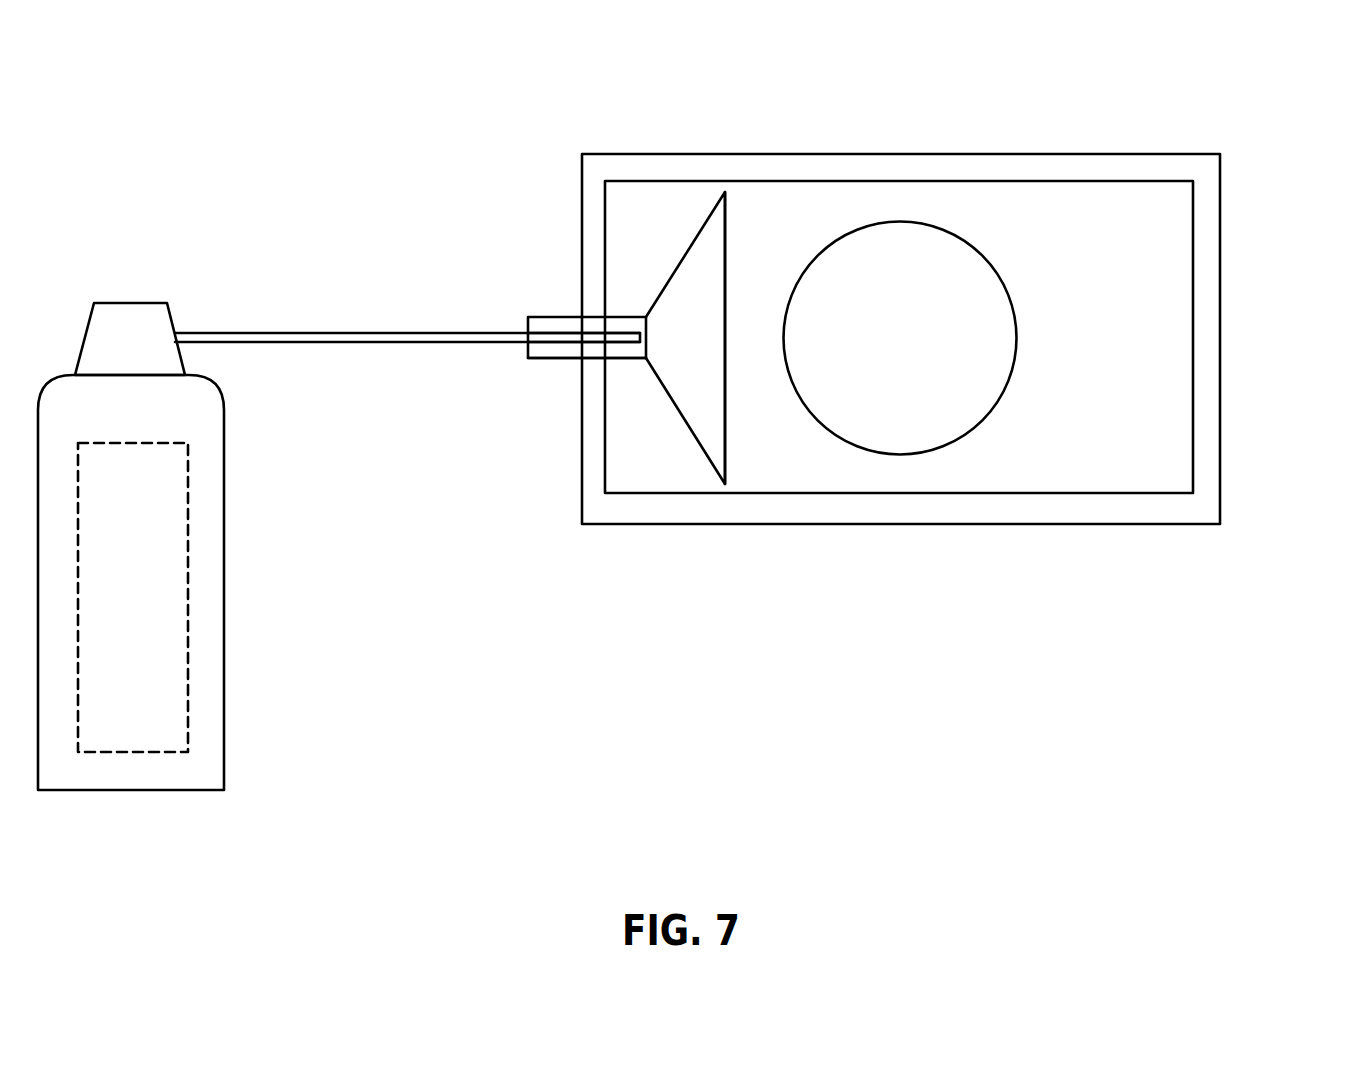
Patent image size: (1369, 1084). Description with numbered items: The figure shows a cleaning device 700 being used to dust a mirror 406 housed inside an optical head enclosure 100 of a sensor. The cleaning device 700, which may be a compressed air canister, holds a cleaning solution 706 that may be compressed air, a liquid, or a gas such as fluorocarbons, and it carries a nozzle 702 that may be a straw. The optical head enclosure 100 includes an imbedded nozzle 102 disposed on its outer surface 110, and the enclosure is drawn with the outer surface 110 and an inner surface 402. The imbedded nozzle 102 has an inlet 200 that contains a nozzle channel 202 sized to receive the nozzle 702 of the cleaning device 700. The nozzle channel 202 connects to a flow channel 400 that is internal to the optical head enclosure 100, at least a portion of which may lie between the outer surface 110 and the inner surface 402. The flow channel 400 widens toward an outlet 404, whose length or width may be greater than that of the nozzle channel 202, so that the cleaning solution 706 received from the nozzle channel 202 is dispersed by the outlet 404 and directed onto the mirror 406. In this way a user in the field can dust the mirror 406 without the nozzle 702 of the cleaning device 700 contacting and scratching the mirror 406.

The optical head enclosure 100 is at (1265, 108).
The outer surface 110 is at (1135, 525).
The inner surface 402 is at (1140, 492).
The flow channel 400 is at (676, 305).
The outlet 404 is at (727, 222).
The mirror 406 is at (904, 403).
The inlet 200 is at (550, 313).
The nozzle channel 202 is at (537, 326).
The nozzle 702 is at (368, 330).
The imbedded nozzle 102 is at (543, 361).
The cleaning device 700 is at (129, 300).
The cleaning solution 706 is at (132, 728).